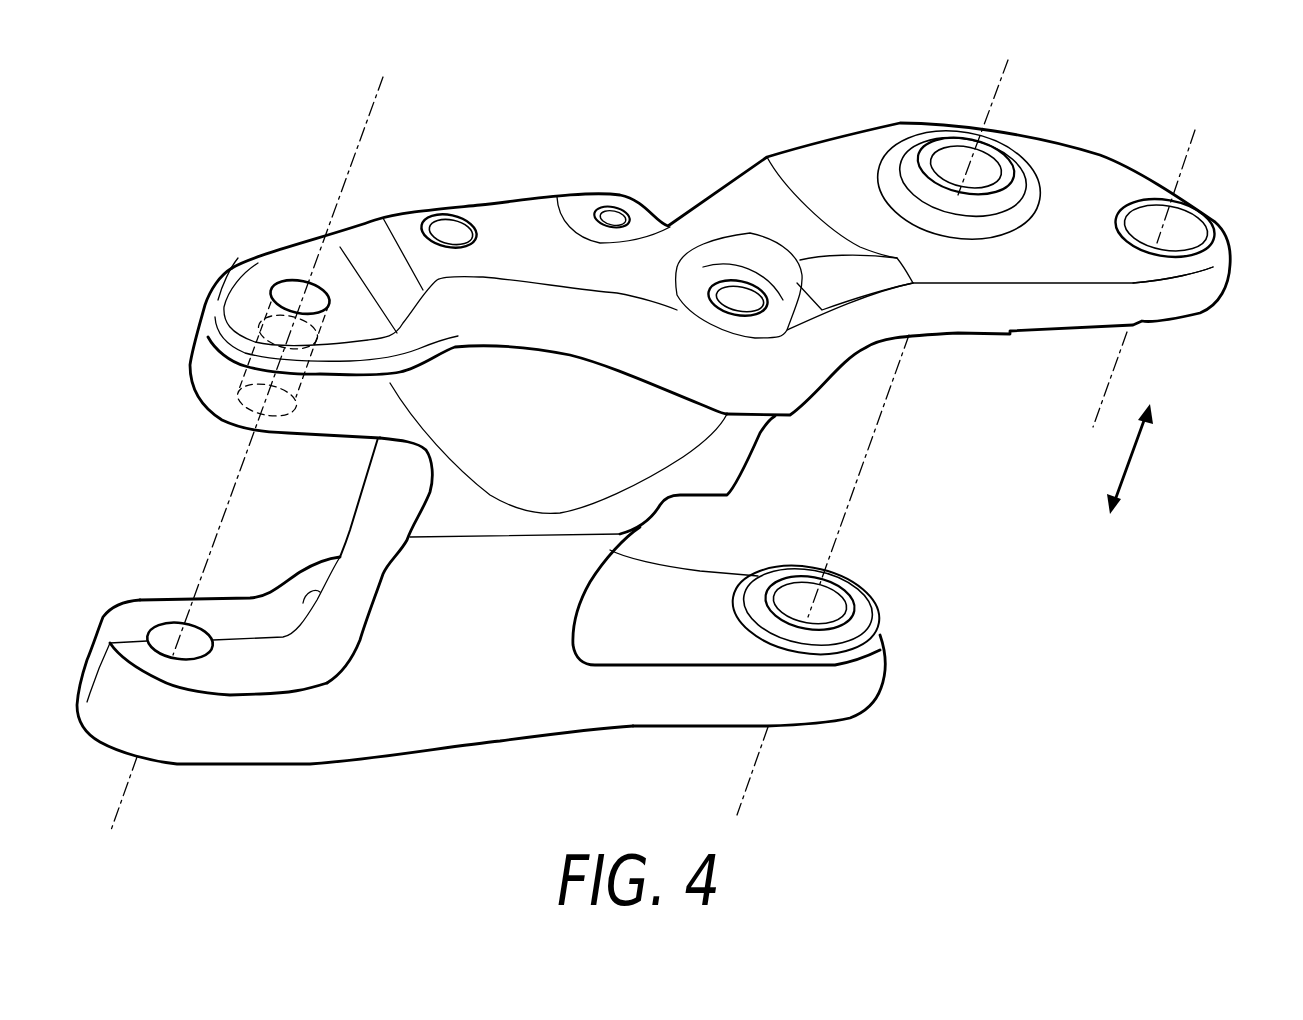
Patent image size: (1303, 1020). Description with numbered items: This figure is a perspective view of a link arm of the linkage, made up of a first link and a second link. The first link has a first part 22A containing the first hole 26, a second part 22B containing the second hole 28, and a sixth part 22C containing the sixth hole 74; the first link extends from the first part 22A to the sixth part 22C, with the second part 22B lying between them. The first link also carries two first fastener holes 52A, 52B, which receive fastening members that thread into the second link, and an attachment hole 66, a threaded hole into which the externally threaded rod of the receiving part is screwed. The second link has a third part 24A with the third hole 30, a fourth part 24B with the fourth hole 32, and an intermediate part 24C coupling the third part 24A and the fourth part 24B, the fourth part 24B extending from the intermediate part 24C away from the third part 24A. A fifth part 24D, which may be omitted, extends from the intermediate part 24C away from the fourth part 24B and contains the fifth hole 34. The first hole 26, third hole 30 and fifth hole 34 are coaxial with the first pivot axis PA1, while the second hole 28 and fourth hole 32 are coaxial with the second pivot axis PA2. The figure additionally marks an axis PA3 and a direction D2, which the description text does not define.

The first part 22A is at (253, 280).
The second part 22B is at (897, 137).
The sixth part 22C is at (1207, 220).
The first hole 26 is at (293, 293).
The second hole 28 is at (947, 160).
The third hole 30 is at (243, 378).
The fourth hole 32 is at (823, 620).
The fifth hole 34 is at (173, 655).
The first fastener hole 52A is at (437, 240).
The first fastener hole 52B is at (740, 307).
The attachment hole 66 is at (613, 223).
The sixth hole 74 is at (1147, 227).
The third part 24A is at (210, 350).
The fourth part 24B is at (853, 687).
The intermediate part 24C is at (367, 537).
The fifth part 24D is at (118, 710).
The first pivot axis PA1 is at (362, 128).
The second pivot axis PA2 is at (1002, 68).
The third pivot axis PA3 is at (1195, 130).
The second direction D2 is at (1135, 457).